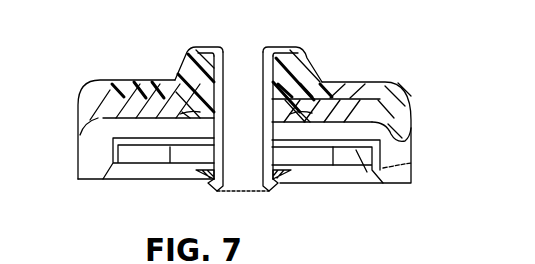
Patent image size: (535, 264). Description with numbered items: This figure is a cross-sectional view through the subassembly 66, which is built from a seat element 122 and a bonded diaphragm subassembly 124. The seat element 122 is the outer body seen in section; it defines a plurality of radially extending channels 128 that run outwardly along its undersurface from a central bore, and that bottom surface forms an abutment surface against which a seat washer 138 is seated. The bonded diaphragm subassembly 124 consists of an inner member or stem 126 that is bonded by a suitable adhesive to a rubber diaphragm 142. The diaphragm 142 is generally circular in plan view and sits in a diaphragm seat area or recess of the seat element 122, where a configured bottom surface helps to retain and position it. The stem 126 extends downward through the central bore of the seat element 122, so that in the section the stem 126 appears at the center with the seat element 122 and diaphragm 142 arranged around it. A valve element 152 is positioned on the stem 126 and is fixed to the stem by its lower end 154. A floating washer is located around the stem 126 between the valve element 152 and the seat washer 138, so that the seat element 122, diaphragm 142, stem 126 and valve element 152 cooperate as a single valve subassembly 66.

The subassembly 66 is at (437, 97).
The seat element 122 is at (100, 90).
The bonded diaphragm subassembly 124 is at (325, 68).
The inner member or stem 126 is at (212, 126).
The radially extending channels 128 is at (413, 122).
The seat washer 138 is at (413, 163).
The rubber diaphragm 142 is at (164, 70).
The valve element 152 is at (300, 177).
The lower end 154 is at (308, 156).